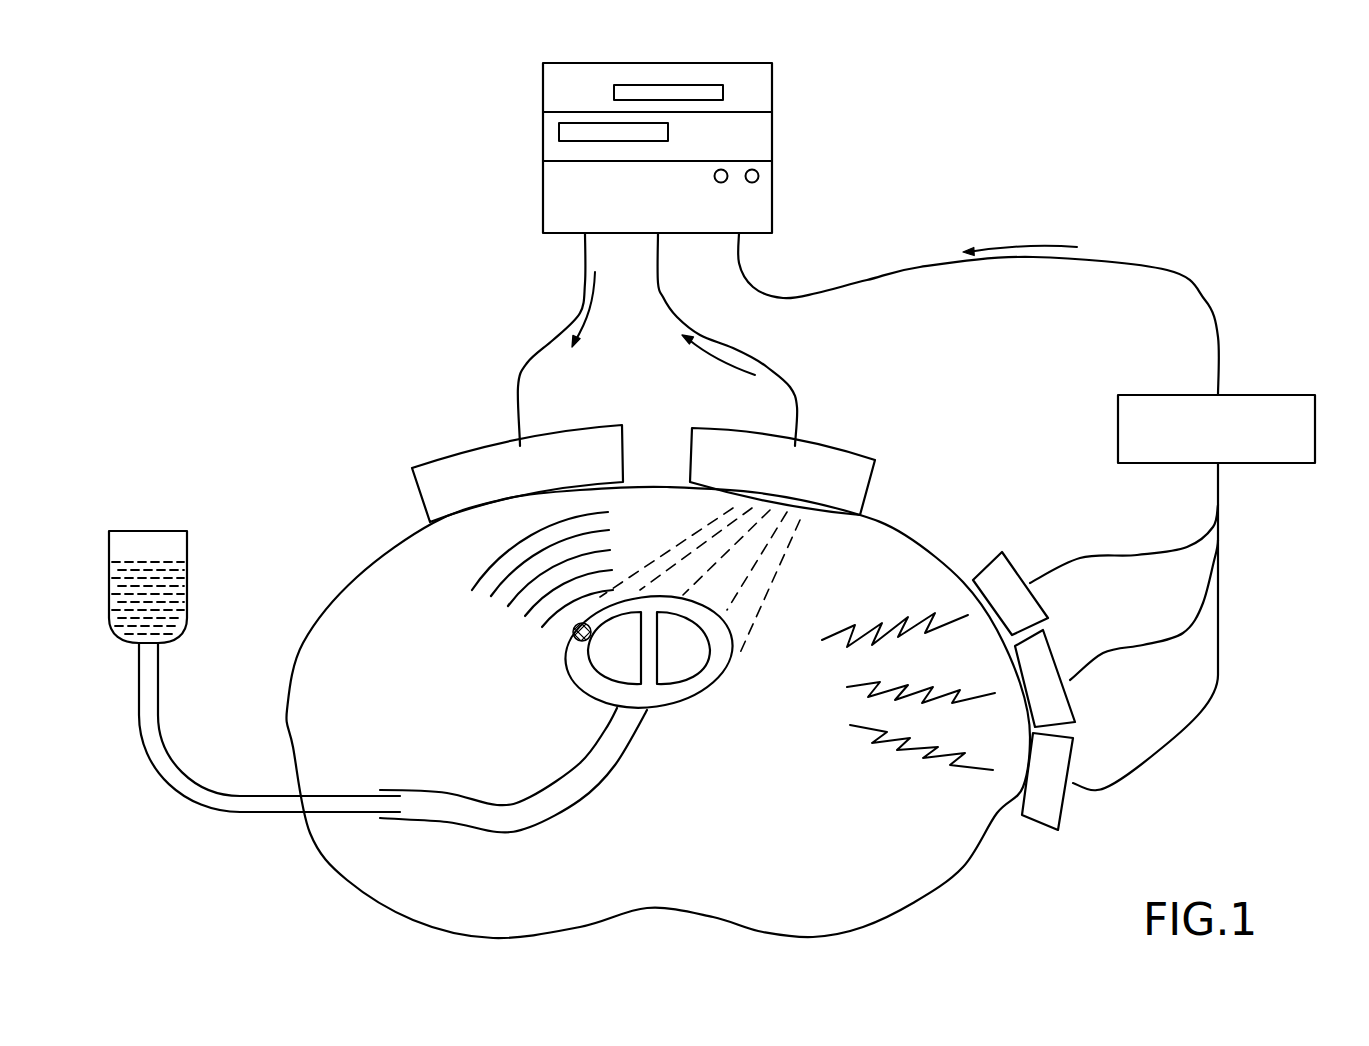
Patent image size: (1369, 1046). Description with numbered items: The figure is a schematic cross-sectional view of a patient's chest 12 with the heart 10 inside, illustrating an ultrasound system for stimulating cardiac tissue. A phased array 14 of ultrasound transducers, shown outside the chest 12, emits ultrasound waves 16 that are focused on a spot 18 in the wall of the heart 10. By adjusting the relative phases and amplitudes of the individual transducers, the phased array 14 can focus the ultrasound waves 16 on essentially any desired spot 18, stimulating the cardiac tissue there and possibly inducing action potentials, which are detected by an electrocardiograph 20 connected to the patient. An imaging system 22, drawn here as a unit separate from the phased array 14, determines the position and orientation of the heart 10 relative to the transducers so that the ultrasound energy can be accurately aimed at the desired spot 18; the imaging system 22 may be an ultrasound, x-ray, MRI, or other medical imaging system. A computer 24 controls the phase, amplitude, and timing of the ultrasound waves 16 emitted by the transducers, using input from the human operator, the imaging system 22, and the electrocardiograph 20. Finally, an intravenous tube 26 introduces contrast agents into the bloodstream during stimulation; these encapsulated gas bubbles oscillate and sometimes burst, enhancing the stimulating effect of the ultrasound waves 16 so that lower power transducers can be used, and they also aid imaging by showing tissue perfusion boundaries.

The heart 10 is at (722, 700).
The chest 12 is at (298, 761).
The phased array of ultrasound transducers 14 is at (457, 452).
The ultrasound waves 16 is at (490, 613).
The spot 18 is at (572, 634).
The electrocardiograph 20 is at (1257, 465).
The imaging system 22 is at (840, 450).
The computer 24 is at (812, 121).
The intravenous tube 26 is at (258, 807).